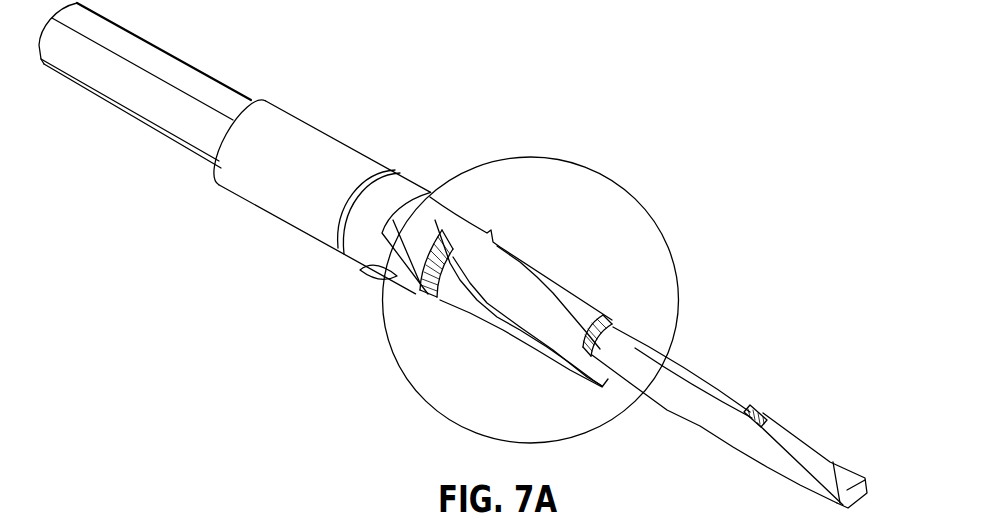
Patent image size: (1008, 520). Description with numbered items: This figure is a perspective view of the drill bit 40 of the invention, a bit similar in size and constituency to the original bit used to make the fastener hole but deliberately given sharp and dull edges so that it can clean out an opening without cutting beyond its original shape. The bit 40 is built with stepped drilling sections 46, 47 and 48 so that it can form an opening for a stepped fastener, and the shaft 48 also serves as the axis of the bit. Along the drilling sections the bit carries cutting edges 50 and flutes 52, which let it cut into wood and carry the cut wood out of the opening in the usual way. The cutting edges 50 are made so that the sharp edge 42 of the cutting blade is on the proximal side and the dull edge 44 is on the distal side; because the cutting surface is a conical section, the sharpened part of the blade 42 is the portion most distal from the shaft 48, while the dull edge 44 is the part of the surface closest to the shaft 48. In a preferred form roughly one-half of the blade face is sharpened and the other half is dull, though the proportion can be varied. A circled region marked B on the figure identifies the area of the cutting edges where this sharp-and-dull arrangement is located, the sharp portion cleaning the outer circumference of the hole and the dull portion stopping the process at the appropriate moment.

The drill bit 40 is at (410, 115).
The shaft 48 is at (163, 66).
The sharp edge 42 is at (432, 297).
The dull edge 44 is at (433, 300).
The detail region B is at (637, 197).
The stepped drilling section 47 is at (718, 316).
The cutting edge 50 is at (776, 423).
The stepped drilling section 46 is at (837, 443).
The flute 52 is at (710, 438).